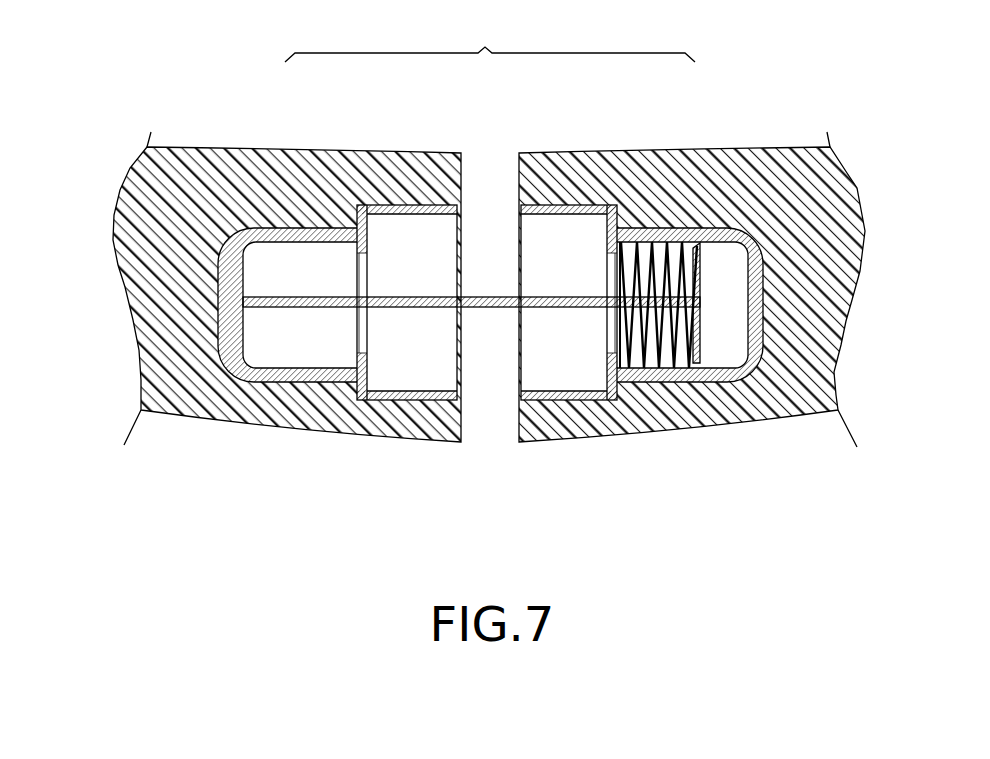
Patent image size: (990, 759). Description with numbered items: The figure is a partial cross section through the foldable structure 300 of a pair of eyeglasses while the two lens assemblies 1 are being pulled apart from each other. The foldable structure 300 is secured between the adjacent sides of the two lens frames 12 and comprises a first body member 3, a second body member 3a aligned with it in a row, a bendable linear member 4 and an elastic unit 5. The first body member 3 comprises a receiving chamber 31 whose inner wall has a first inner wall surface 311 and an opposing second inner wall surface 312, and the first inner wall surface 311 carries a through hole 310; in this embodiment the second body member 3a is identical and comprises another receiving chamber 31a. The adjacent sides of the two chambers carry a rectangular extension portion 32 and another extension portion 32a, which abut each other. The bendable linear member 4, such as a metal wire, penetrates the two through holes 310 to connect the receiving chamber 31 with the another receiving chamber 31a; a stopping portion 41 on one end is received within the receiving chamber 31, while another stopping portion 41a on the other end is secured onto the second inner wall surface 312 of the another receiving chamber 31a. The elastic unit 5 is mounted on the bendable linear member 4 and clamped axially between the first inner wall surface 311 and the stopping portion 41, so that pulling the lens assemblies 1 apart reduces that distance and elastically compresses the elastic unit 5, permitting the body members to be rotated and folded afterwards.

The foldable structure 300 is at (490, 36).
The lens assembly 1 is at (188, 420).
The lens frame 12 is at (493, 334).
The second body member 3a is at (246, 238).
The another receiving chamber 31a is at (196, 233).
The another extension portion 32a is at (407, 250).
The another stopping portion 41a is at (240, 268).
The first body member 3 is at (725, 238).
The receiving chamber 31 is at (773, 236).
The extension portion 32 is at (565, 211).
The stopping portion 41 is at (700, 312).
The bendable linear member 4 is at (491, 298).
The elastic unit 5 is at (680, 270).
The through hole 310 is at (367, 335).
The first inner wall surface 311 is at (350, 382).
The second inner wall surface 312 is at (247, 327).